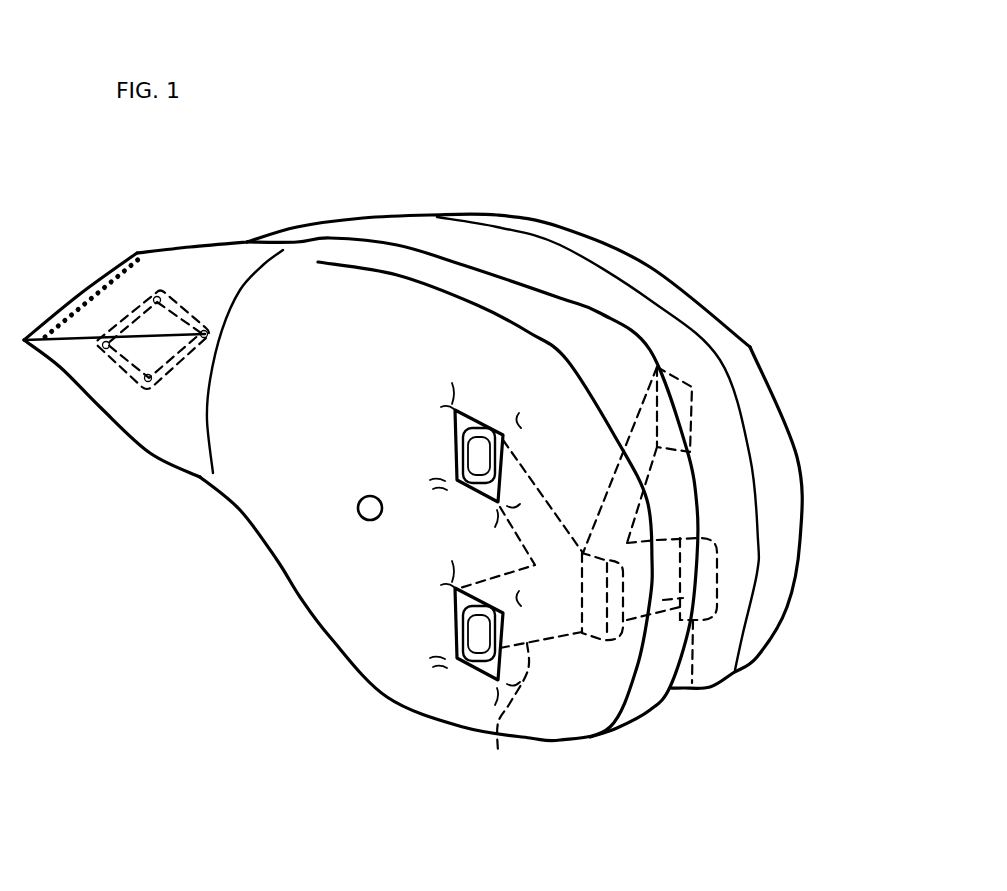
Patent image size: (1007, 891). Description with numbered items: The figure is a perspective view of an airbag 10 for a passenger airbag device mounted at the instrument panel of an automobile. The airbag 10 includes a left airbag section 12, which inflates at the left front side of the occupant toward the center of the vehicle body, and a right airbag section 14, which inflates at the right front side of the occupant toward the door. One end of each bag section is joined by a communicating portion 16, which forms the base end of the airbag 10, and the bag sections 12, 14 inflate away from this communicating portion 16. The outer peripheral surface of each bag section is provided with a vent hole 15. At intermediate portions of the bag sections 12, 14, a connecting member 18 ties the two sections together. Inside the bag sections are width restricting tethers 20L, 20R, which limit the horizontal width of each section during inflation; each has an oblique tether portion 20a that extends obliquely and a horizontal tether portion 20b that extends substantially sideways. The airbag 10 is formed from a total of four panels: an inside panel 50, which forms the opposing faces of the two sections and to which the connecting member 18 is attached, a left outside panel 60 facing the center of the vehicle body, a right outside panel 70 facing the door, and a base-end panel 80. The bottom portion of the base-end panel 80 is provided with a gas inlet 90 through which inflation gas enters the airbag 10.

The airbag 10 is at (381, 188).
The left airbag section 12 is at (380, 714).
The right airbag section 14 is at (671, 258).
The vent hole 15 is at (370, 493).
The communicating portion 16 is at (81, 426).
The connecting member 18 is at (588, 642).
The oblique tether portion 20a is at (637, 432).
The horizontal tether portion 20b is at (693, 683).
The width restricting tether 20L is at (497, 555).
The width restricting tether 20R is at (677, 520).
The inside panel 50 is at (648, 692).
The left outside panel 60 is at (567, 727).
The right outside panel 70 is at (782, 567).
The base-end panel 80 is at (164, 449).
The gas inlet 90 is at (185, 350).